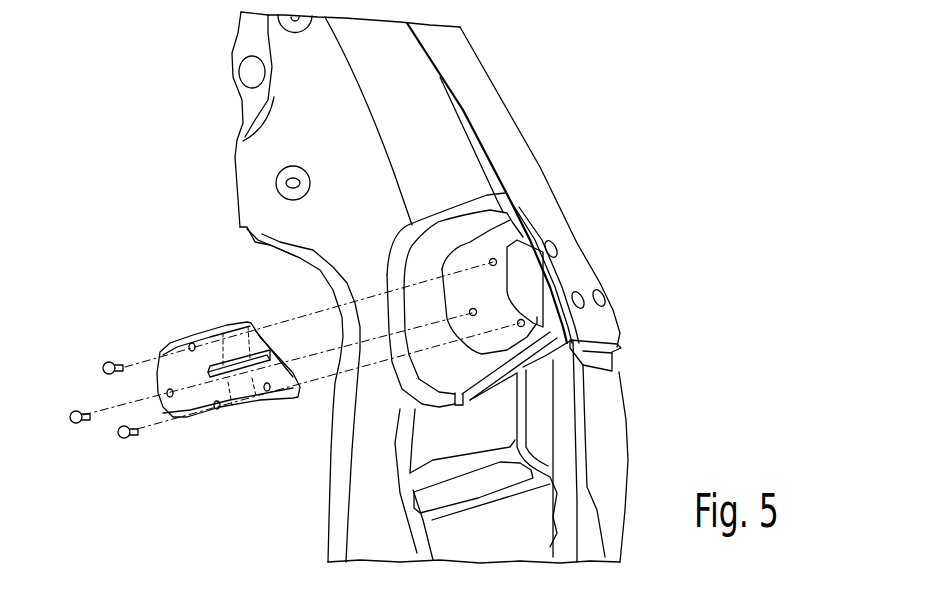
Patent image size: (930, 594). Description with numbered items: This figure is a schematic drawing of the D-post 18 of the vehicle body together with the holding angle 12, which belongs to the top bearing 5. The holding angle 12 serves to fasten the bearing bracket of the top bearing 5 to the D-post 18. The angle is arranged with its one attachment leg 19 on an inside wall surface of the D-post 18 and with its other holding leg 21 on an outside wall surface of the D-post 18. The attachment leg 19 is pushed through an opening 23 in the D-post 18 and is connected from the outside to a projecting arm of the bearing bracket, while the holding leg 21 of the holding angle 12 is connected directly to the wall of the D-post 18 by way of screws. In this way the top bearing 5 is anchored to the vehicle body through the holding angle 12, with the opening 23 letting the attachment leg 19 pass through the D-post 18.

The top bearing 5 is at (601, 245).
The holding angle 12 is at (202, 330).
The D-post 18 is at (438, 137).
The attachment leg 19 is at (257, 345).
The holding leg 21 is at (173, 363).
The opening 23 is at (510, 266).